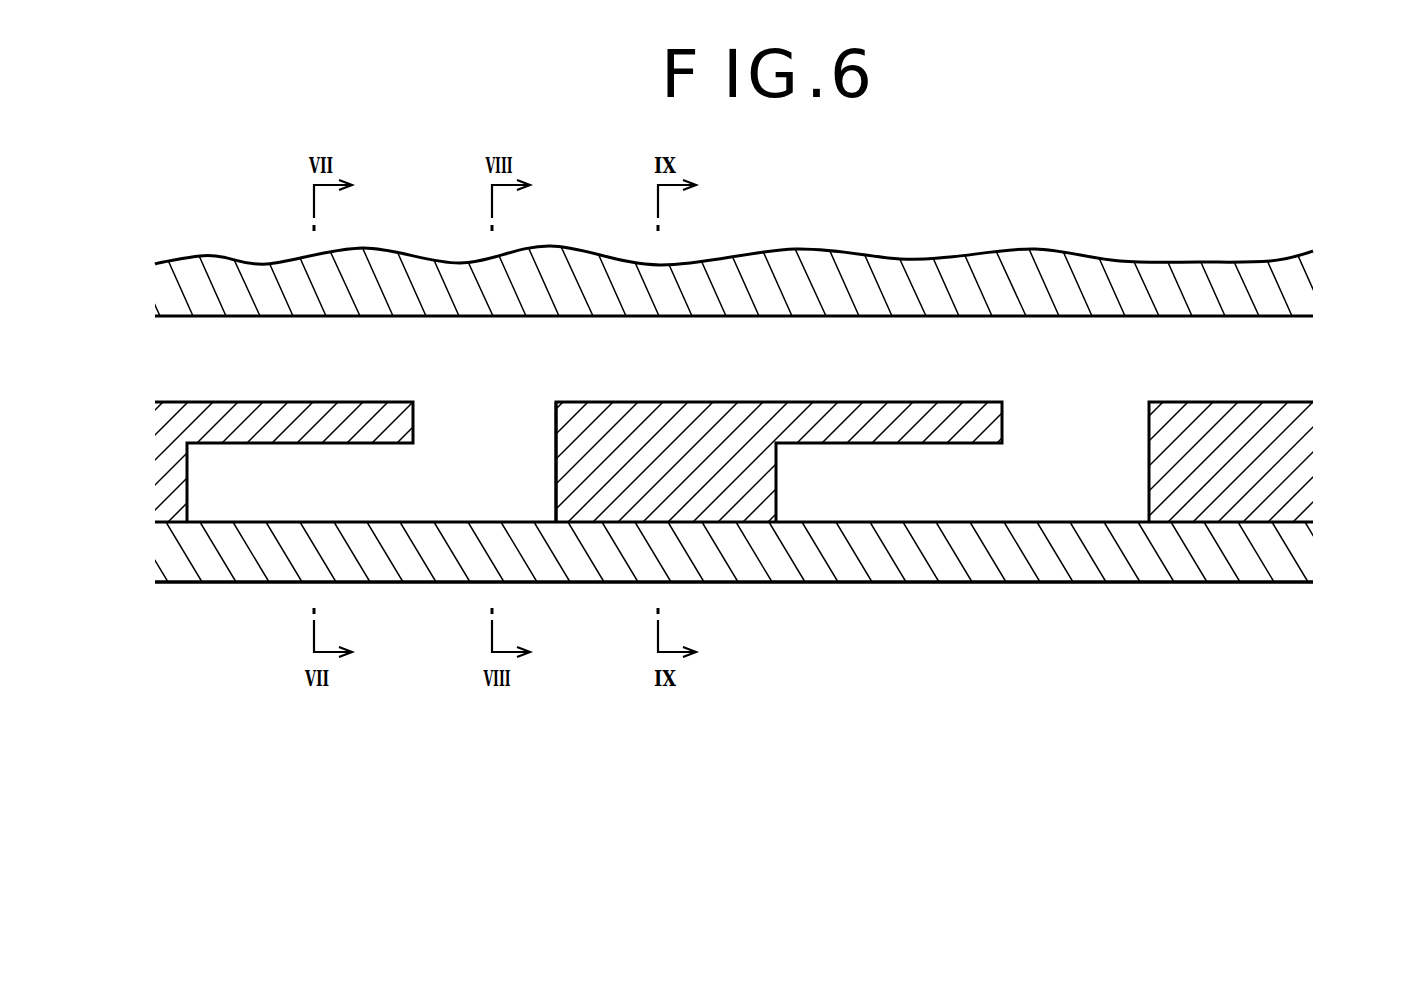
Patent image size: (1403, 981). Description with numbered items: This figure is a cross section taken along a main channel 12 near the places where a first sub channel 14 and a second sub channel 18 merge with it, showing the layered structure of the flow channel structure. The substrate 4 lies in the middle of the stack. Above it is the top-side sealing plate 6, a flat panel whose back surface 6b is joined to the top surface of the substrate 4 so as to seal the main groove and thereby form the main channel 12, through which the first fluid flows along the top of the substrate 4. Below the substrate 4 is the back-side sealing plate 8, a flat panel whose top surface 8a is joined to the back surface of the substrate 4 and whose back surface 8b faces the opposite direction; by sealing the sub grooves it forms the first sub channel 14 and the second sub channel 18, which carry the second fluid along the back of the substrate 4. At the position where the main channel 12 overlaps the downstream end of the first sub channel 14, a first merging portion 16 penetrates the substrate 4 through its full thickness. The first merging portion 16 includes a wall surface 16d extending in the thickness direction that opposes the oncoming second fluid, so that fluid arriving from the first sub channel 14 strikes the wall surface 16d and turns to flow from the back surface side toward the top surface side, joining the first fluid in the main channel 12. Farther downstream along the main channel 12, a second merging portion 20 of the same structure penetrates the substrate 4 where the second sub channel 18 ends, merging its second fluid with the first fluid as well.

The substrate 4 is at (1279, 448).
The top-side sealing plate 6 is at (1150, 273).
The back surface of the top-side sealing plate 6b is at (1250, 317).
The back-side sealing plate 8 is at (1263, 563).
The top surface of the back-side sealing plate 8a is at (1262, 518).
The back surface of the back-side sealing plate 8b is at (1137, 583).
The main channel 12 is at (755, 342).
The first sub channel 14 is at (286, 506).
The first merging portion 16 is at (455, 452).
The wall surface 16d is at (555, 482).
The second sub channel 18 is at (915, 506).
The second merging portion 20 is at (1063, 451).